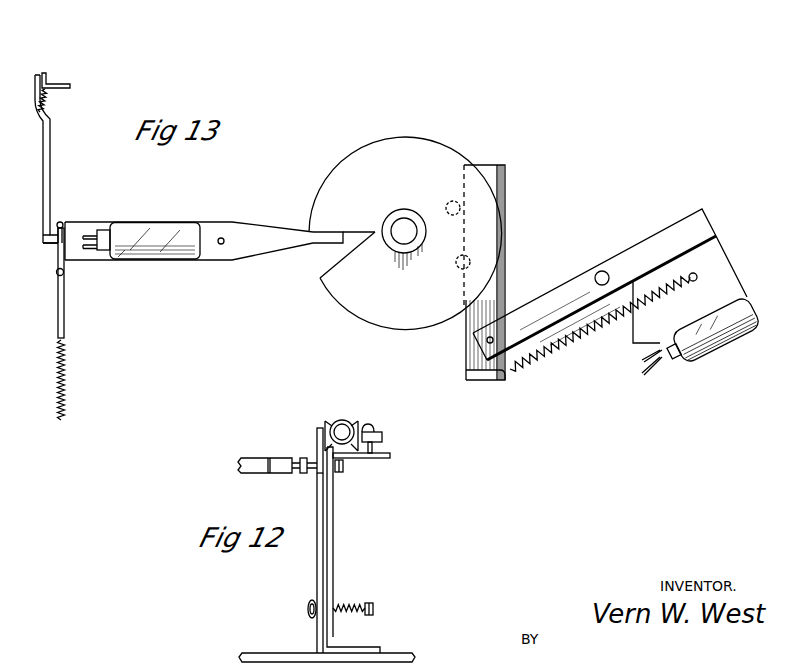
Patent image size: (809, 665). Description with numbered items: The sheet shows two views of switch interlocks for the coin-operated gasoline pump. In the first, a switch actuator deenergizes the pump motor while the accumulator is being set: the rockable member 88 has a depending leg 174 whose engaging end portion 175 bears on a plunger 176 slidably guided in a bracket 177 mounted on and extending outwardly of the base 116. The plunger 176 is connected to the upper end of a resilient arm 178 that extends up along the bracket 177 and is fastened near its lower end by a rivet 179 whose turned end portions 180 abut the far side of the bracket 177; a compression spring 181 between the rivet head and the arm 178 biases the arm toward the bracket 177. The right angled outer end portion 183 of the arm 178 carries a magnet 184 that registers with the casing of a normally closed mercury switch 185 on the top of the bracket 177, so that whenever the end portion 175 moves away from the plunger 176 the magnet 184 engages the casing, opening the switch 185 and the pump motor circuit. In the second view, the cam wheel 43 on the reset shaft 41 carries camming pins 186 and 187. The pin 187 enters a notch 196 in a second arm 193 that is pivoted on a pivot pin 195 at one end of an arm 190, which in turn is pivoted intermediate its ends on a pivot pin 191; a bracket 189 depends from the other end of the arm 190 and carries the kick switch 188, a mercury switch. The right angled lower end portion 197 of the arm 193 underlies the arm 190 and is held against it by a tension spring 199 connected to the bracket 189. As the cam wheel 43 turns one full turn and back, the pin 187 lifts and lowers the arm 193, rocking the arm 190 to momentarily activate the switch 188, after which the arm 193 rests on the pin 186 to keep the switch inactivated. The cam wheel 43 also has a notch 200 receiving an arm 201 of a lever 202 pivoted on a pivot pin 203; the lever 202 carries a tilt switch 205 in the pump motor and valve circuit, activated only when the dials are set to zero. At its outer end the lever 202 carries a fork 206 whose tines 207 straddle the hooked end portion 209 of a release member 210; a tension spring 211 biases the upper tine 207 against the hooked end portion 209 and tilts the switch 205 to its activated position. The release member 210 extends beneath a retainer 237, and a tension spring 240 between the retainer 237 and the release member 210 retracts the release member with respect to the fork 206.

In FIG. 13, the cam wheel 43 is at (370, 148).
In FIG. 13, the reset shaft 41 is at (403, 219).
In FIG. 12, the rockable member 88 is at (240, 463).
In FIG. 12, the base 116 is at (400, 652).
In FIG. 12, the depending leg 174 is at (268, 474).
In FIG. 12, the engaging end portion 175 is at (303, 458).
In FIG. 12, the plunger 176 is at (319, 462).
In FIG. 12, the bracket 177 is at (317, 566).
In FIG. 12, the resilient arm 178 is at (334, 500).
In FIG. 12, the rivet 179 is at (374, 606).
In FIG. 12, the end portions 180 is at (309, 613).
In FIG. 12, the compression spring 181 is at (355, 605).
In FIG. 12, the right angled outer end portion 183 is at (385, 454).
In FIG. 12, the magnet 184 is at (378, 431).
In FIG. 12, the mercury switch 185 is at (342, 420).
In FIG. 13, the camming pin 186 is at (455, 201).
In FIG. 13, the camming pin 187 is at (460, 259).
In FIG. 13, the kick switch 188 is at (712, 351).
In FIG. 13, the bracket 189 is at (728, 264).
In FIG. 13, the arm 190 is at (686, 215).
In FIG. 13, the pivot pin 191 is at (605, 271).
In FIG. 13, the second arm 193 is at (507, 256).
In FIG. 13, the pivot pin 195 is at (487, 340).
In FIG. 13, the notch 196 is at (464, 257).
In FIG. 13, the right angled lower end portion 197 is at (484, 382).
In FIG. 13, the tension spring 199 is at (557, 346).
In FIG. 13, the notch 200 is at (330, 272).
In FIG. 13, the arm 201 is at (310, 231).
In FIG. 13, the lever 202 is at (212, 225).
In FIG. 13, the pivot pin 203 is at (221, 245).
In FIG. 13, the tilt switch 205 is at (149, 259).
In FIG. 13, the fork 206 is at (64, 315).
In FIG. 13, the tines 207 is at (61, 222).
In FIG. 13, the hooked end portion 209 is at (55, 240).
In FIG. 13, the release member 210 is at (43, 162).
In FIG. 13, the tension spring 211 is at (67, 362).
In FIG. 13, the retainer 237 is at (66, 86).
In FIG. 13, the tension spring 240 is at (50, 101).